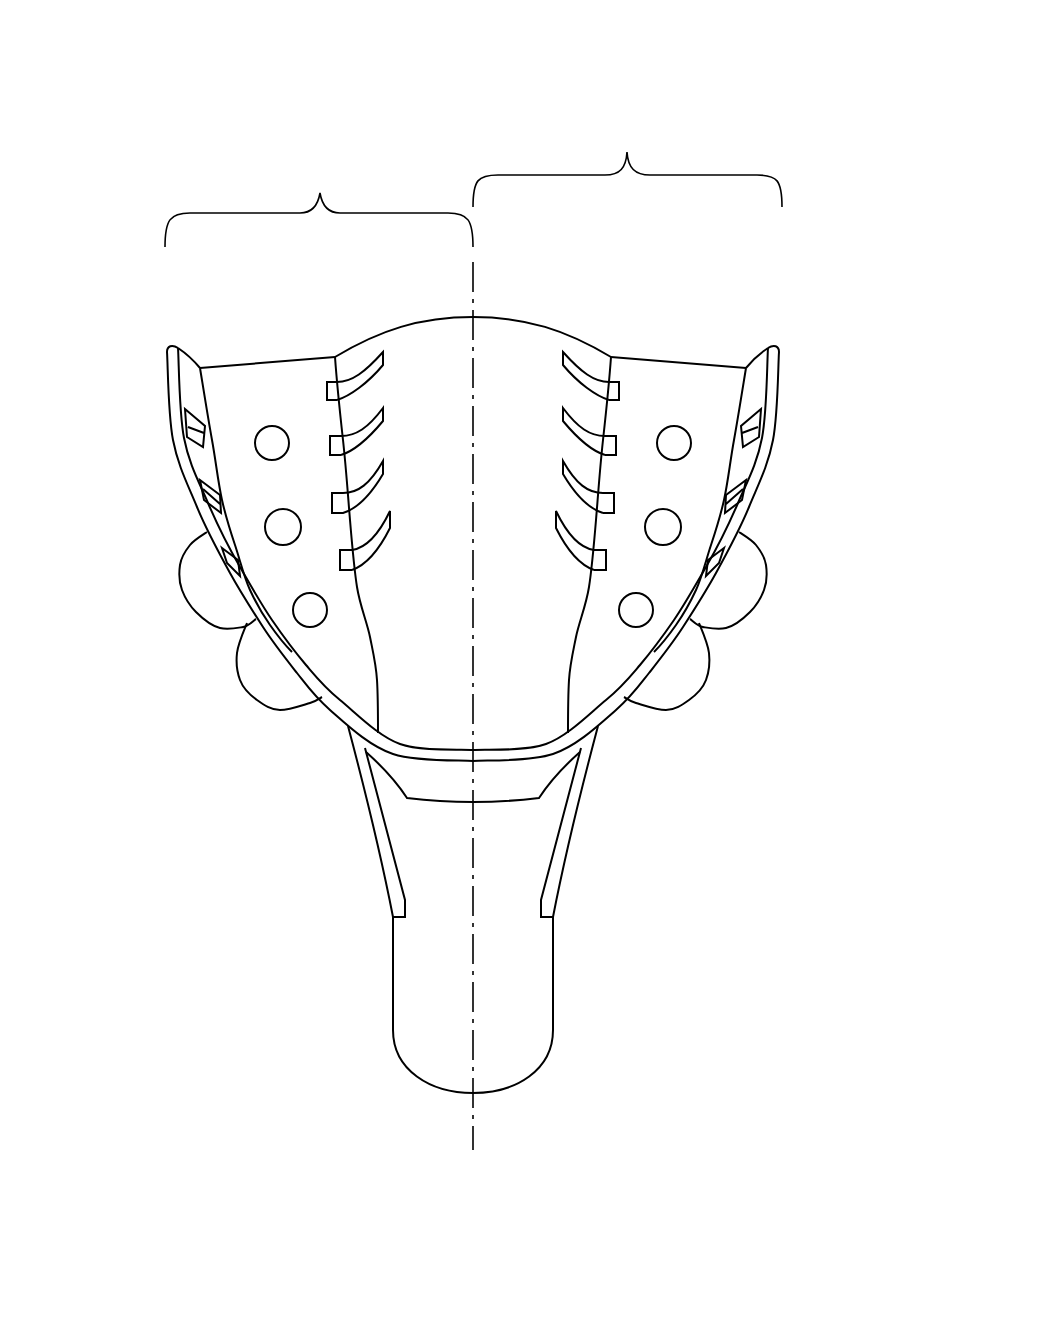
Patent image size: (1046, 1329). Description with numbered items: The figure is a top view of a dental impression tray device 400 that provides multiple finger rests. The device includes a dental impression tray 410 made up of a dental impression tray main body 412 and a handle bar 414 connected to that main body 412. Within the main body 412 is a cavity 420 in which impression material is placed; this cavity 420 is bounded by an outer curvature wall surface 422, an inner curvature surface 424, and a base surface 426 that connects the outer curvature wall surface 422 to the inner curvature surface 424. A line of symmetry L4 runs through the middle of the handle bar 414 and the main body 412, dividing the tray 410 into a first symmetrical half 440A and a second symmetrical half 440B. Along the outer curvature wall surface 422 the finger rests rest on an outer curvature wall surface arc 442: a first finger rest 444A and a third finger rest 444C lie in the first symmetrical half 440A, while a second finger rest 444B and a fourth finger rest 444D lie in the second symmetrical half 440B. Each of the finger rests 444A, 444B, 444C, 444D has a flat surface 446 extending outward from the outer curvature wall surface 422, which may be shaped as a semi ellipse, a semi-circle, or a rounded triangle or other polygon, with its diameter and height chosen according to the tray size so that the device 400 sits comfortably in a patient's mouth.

The dental impression tray device 400 is at (766, 78).
The dental impression tray 410 is at (762, 802).
The dental impression tray main body 412 is at (160, 465).
The handle bar 414 is at (585, 976).
The cavity 420 is at (259, 388).
The outer curvature wall surface 422 is at (177, 347).
The inner curvature surface 424 is at (340, 355).
The base surface 426 is at (322, 360).
The first symmetrical half 440A is at (320, 193).
The second symmetrical half 440B is at (627, 152).
The outer curvature wall surface arc 442 is at (200, 557).
The first finger rest 444A is at (238, 657).
The second finger rest 444B is at (683, 688).
The third finger rest 444C is at (190, 593).
The fourth finger rest 444D is at (757, 602).
The flat surface 446 is at (208, 587).
The central axis L4 is at (473, 287).